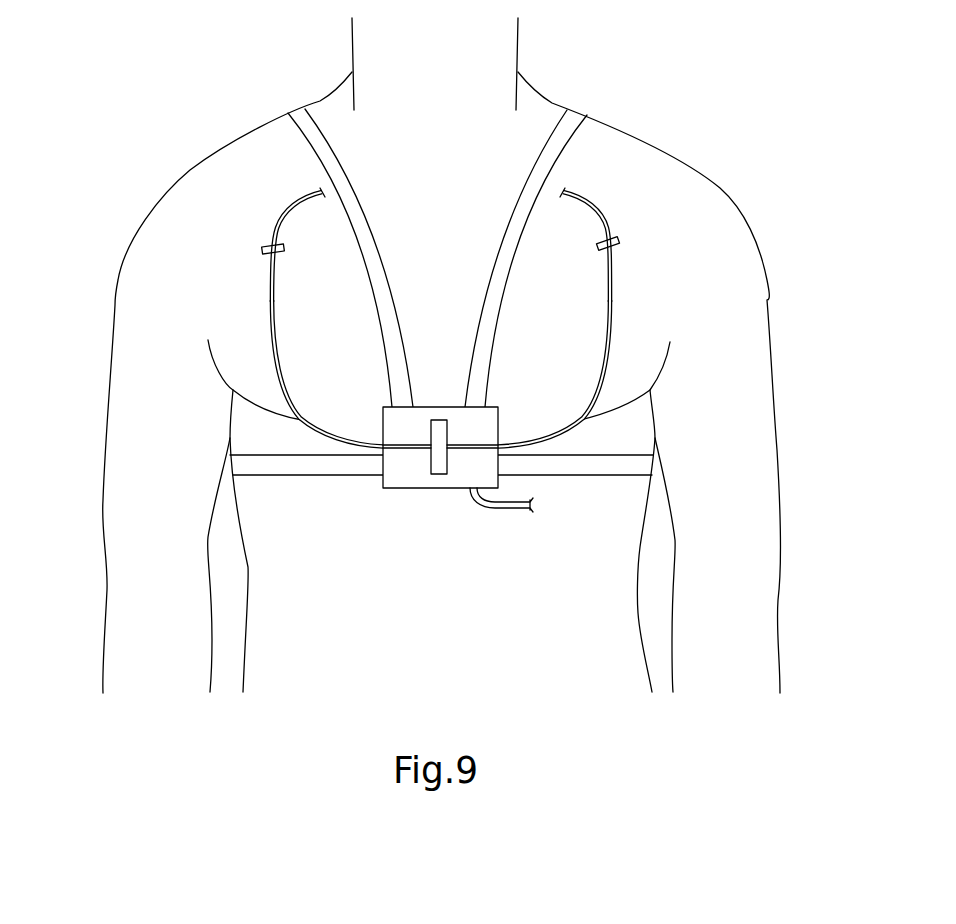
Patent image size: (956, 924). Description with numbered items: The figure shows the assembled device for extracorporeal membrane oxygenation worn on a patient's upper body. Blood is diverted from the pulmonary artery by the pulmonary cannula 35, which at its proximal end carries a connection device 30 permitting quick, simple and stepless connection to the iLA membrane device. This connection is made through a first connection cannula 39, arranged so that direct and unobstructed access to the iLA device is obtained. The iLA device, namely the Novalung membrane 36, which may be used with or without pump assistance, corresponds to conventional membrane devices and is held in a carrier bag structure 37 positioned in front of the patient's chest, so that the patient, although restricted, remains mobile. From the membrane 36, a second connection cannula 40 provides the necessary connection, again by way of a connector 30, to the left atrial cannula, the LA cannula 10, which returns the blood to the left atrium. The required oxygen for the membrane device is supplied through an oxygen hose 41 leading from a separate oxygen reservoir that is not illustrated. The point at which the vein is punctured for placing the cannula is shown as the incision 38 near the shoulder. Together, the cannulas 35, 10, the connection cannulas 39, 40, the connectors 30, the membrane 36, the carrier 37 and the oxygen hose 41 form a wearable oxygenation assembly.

The LA cannula 10 is at (438, 321).
The connector 30 is at (265, 248).
The pulmonary cannula 35 is at (595, 200).
The Novalung membrane 36 is at (398, 477).
The carrier bag structure 37 is at (320, 465).
The incision 38 is at (322, 193).
The first connection cannula 39 is at (617, 297).
The second connection cannula 40 is at (270, 298).
The oxygen hose 41 is at (497, 511).